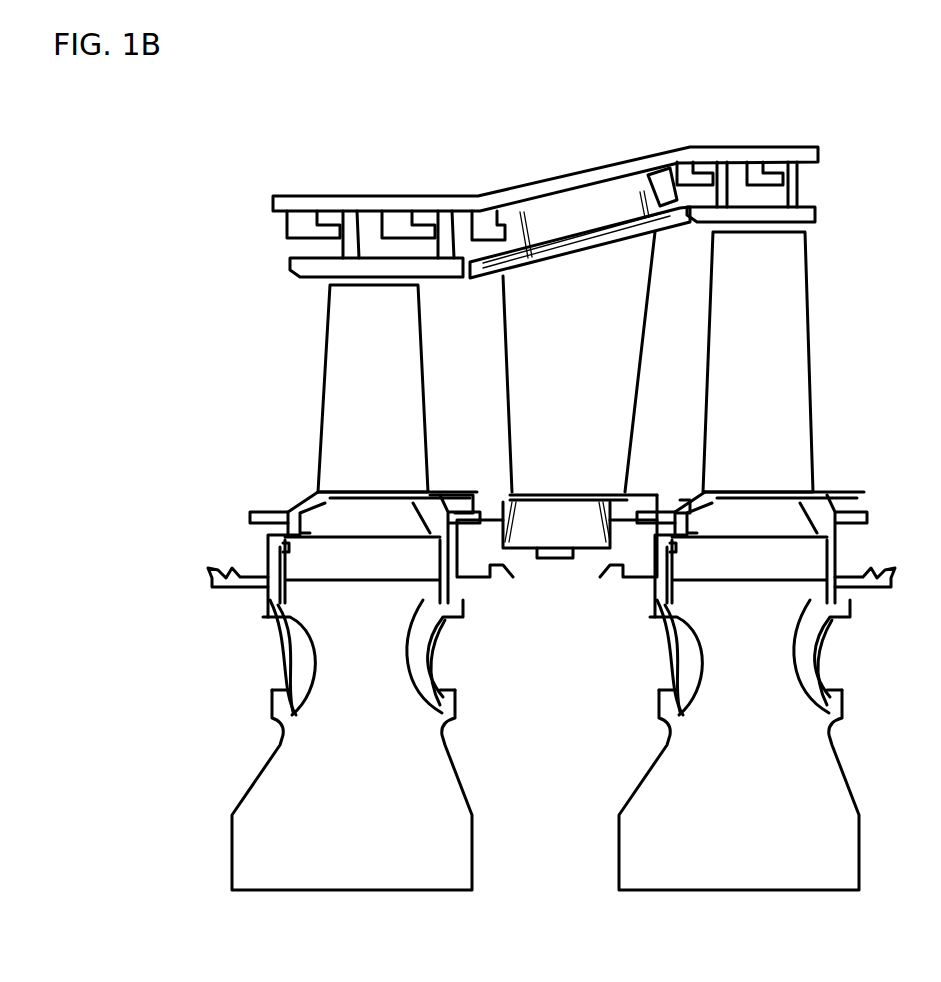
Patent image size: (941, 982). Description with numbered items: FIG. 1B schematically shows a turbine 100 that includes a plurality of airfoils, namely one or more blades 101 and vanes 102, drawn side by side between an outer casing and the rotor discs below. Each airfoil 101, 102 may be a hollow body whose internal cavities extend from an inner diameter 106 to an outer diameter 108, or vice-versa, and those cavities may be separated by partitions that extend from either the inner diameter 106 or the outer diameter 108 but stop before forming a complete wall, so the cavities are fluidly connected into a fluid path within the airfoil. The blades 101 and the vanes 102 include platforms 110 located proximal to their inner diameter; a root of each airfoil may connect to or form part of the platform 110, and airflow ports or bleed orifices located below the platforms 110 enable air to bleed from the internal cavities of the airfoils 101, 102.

The turbine 100 is at (125, 212).
The blade 101 is at (408, 358).
The vane 102 is at (623, 328).
The inner diameter 106 is at (503, 478).
The outer diameter 108 is at (292, 293).
The platform 110 is at (650, 498).